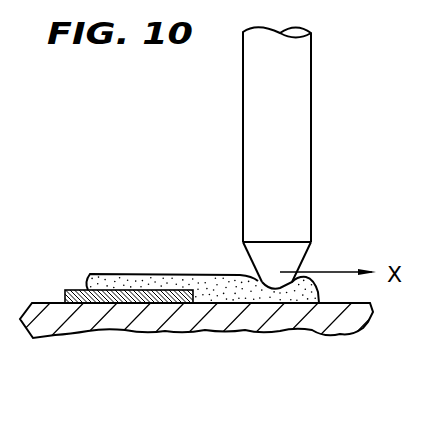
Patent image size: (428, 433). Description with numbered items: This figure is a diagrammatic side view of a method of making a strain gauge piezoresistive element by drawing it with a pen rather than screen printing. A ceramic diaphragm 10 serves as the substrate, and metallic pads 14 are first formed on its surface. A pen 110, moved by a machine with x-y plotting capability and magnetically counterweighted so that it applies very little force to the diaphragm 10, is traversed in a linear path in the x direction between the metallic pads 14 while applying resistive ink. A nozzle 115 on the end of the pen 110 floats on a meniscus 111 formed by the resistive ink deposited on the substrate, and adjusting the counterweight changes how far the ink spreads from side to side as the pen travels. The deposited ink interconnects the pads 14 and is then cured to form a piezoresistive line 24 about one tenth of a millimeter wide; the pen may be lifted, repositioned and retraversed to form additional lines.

The ceramic diaphragm 10 is at (327, 318).
The metallic pads 14 is at (100, 308).
The piezoresistive line 24 is at (117, 273).
The pen 110 is at (288, 118).
The nozzle 115 is at (282, 253).
The meniscus 111 is at (253, 279).